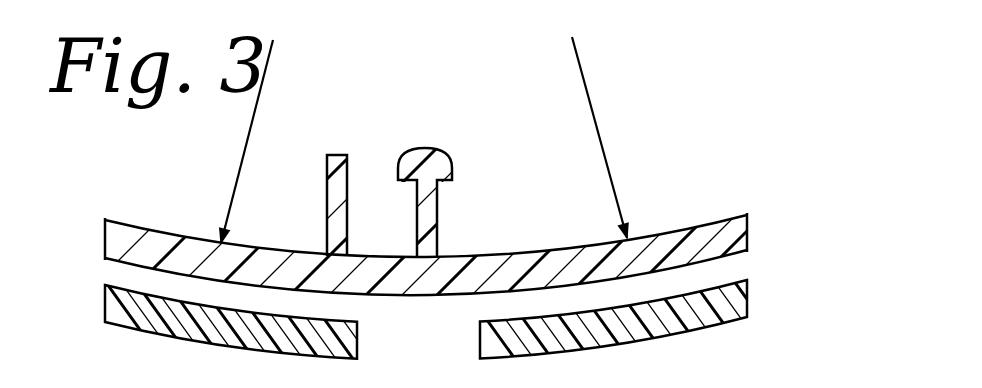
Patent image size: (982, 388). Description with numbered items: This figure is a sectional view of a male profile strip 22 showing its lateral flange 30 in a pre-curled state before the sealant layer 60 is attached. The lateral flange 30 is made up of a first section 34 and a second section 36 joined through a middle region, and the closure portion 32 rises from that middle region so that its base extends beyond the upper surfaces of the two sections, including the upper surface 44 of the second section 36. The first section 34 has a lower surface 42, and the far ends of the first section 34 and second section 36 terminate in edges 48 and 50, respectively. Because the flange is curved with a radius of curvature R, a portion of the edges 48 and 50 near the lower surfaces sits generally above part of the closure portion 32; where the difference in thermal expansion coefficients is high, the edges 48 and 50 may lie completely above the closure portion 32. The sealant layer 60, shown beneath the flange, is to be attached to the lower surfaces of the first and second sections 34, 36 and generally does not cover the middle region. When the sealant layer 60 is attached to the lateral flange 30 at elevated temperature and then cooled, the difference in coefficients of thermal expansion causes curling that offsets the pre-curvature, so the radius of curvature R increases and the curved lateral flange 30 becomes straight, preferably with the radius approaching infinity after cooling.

The male profile strip 22 is at (676, 91).
The lateral flange 30 is at (769, 224).
The closure portion 32 is at (482, 200).
The first section 34 is at (654, 250).
The second section 36 is at (162, 247).
The lower surface 42 is at (735, 257).
The upper surface 44 is at (122, 262).
The edge 48 is at (748, 240).
The edge 50 is at (104, 232).
The sealant layer 60 is at (769, 306).